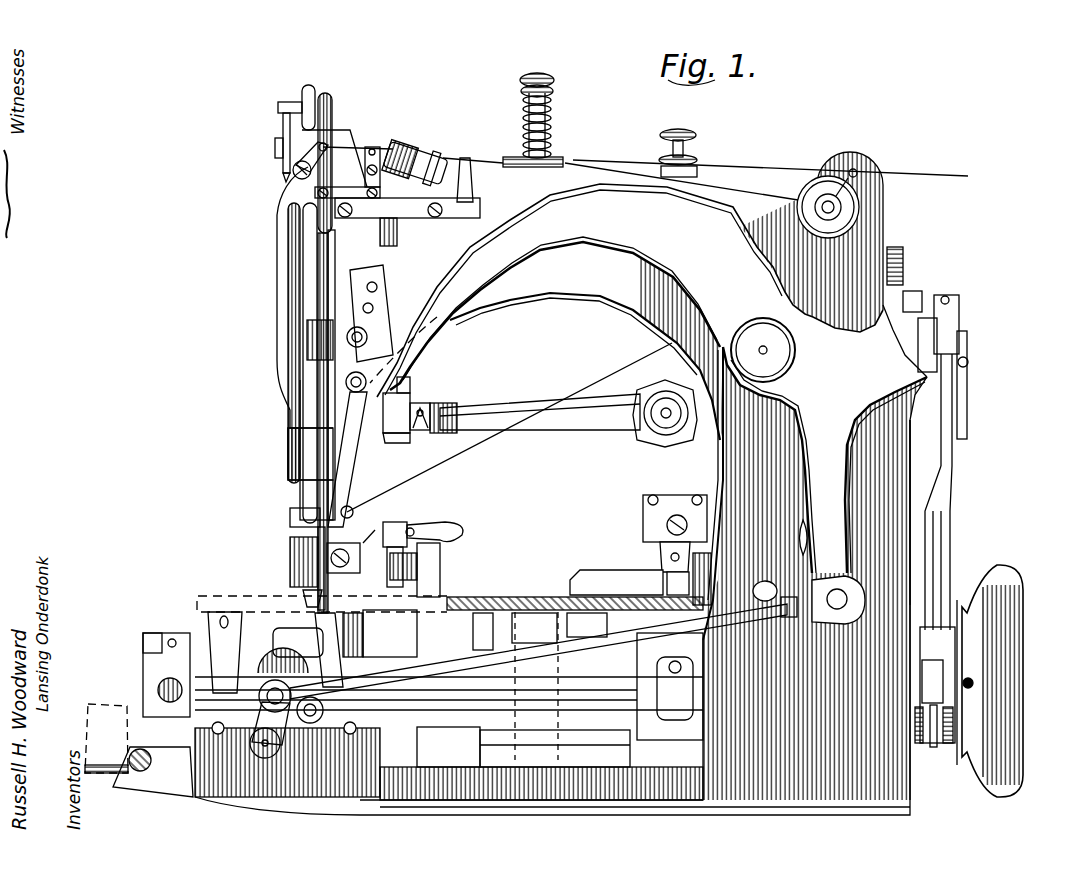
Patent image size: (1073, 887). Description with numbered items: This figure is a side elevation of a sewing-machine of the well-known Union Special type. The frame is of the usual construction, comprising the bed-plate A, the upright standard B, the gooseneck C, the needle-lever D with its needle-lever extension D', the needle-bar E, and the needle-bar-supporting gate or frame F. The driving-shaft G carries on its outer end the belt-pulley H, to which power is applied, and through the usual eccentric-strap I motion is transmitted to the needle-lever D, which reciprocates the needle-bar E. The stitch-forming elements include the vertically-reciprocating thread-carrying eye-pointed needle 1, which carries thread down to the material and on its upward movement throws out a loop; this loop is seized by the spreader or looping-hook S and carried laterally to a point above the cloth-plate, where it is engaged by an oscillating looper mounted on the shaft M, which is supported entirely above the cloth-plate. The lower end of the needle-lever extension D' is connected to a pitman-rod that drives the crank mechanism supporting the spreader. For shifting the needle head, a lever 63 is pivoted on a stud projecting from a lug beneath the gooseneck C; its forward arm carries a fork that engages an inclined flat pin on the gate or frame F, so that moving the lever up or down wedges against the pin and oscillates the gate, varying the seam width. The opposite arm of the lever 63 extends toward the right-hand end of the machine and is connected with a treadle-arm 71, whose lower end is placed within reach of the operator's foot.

The bed-plate A is at (268, 790).
The standard B is at (806, 610).
The gooseneck C is at (833, 264).
The needle-lever D is at (645, 256).
The needle-lever extension D' is at (748, 479).
The needle-bar E is at (276, 353).
The needle-bar-supporting gate or frame F is at (346, 306).
The driving-shaft G is at (504, 671).
The belt-pulley H is at (1006, 681).
The eccentric-strap I is at (944, 521).
The shaft M is at (340, 307).
The spreader or looping-hook S is at (450, 567).
The eye-pointed needle 1 is at (290, 547).
The lever 63 is at (571, 425).
The treadle-arm 71 is at (984, 385).